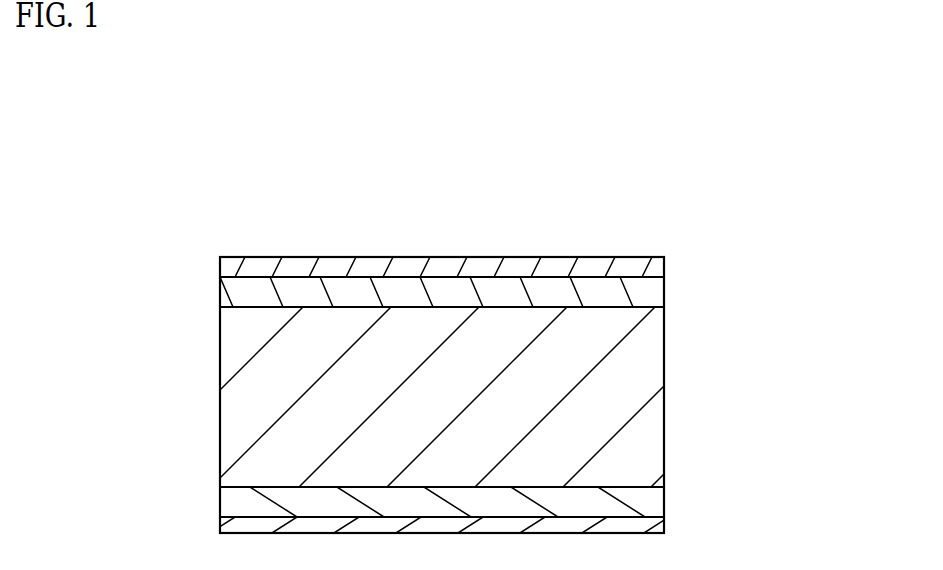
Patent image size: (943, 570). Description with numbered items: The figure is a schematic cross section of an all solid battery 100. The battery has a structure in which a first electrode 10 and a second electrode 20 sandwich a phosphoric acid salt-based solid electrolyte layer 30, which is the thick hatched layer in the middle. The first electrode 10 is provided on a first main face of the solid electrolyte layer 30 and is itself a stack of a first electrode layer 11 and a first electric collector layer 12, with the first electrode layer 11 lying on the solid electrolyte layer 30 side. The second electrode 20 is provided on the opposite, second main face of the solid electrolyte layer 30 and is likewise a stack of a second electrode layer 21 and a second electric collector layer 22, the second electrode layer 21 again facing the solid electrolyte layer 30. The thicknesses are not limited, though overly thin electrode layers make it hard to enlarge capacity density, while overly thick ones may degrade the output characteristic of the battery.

The all solid battery 100 is at (860, 158).
The first electrode 10 is at (511, 511).
The first electrode layer 11 is at (655, 498).
The first electric collector layer 12 is at (650, 531).
The second electrode 20 is at (516, 279).
The second electrode layer 21 is at (655, 296).
The second electric collector layer 22 is at (655, 263).
The solid electrolyte layer 30 is at (655, 403).